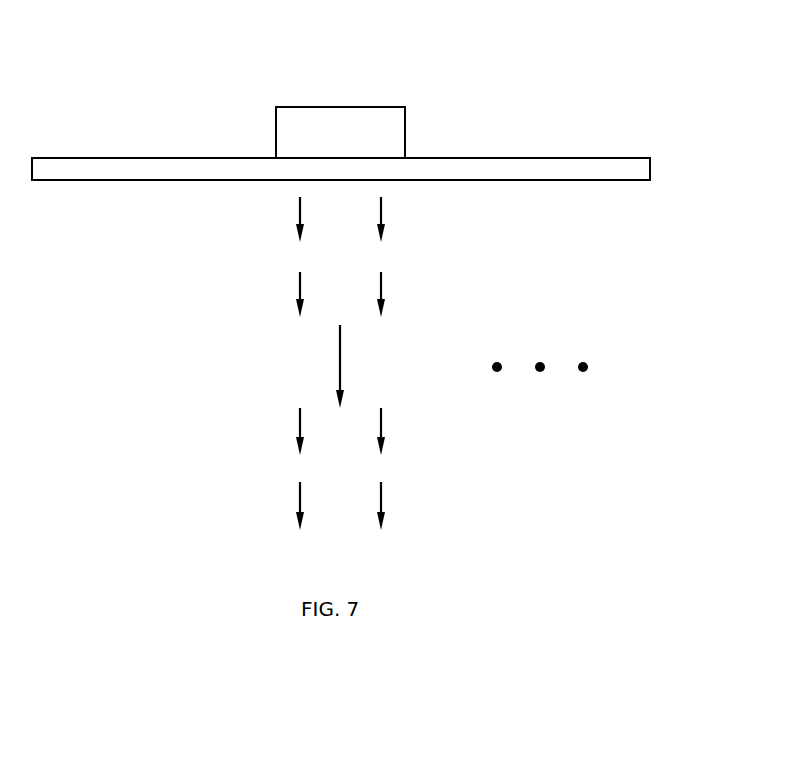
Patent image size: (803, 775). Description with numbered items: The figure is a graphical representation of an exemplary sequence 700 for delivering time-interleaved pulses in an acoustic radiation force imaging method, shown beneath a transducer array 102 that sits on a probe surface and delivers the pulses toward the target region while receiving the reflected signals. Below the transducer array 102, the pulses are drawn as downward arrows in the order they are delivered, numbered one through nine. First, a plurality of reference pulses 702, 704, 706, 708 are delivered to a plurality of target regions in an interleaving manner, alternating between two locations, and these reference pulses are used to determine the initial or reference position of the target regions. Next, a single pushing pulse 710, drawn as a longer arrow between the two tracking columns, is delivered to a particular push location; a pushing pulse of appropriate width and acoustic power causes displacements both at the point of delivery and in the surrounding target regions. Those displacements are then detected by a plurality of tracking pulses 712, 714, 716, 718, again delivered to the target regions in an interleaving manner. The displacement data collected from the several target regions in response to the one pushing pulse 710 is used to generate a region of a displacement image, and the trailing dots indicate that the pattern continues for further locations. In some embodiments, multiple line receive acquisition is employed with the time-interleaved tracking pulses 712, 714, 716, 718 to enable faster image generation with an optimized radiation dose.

The sequence of delivering time interleaved tracking pulses 700 is at (532, 53).
The transducer array 102 is at (405, 131).
The reference pulse 702 is at (298, 222).
The reference pulse 704 is at (383, 222).
The reference pulse 706 is at (298, 297).
The reference pulse 708 is at (383, 297).
The pushing pulse 710 is at (338, 373).
The tracking pulse 712 is at (298, 435).
The tracking pulse 714 is at (383, 435).
The tracking pulse 716 is at (298, 509).
The tracking pulse 718 is at (383, 509).